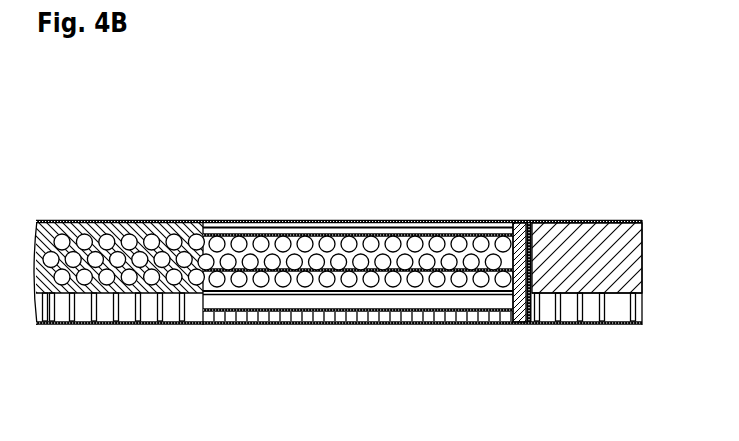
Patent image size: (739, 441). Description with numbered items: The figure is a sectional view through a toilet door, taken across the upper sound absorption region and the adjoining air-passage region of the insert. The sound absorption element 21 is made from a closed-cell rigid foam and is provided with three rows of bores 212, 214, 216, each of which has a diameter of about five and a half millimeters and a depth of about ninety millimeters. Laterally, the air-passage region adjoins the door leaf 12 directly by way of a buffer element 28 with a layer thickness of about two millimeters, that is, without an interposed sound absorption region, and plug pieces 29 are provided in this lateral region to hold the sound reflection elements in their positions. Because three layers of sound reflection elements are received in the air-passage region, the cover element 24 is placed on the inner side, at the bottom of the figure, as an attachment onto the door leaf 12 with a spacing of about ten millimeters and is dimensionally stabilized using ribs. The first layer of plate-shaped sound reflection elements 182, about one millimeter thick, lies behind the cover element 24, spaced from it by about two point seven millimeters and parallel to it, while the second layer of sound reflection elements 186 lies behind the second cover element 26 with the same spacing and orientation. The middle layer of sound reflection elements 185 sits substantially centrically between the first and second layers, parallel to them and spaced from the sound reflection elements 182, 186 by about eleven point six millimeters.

The door leaf 12 is at (595, 231).
The sound absorption element 21 is at (181, 222).
The cover element 24 is at (484, 323).
The second cover element 26 is at (481, 221).
The buffer element 28 is at (527, 225).
The plug pieces 29 is at (518, 322).
The sound reflection elements 182 is at (345, 314).
The sound reflection elements 185 is at (437, 232).
The sound reflection elements 186 is at (360, 232).
The bores 212 is at (62, 277).
The bores 214 is at (117, 260).
The bores 216 is at (61, 242).